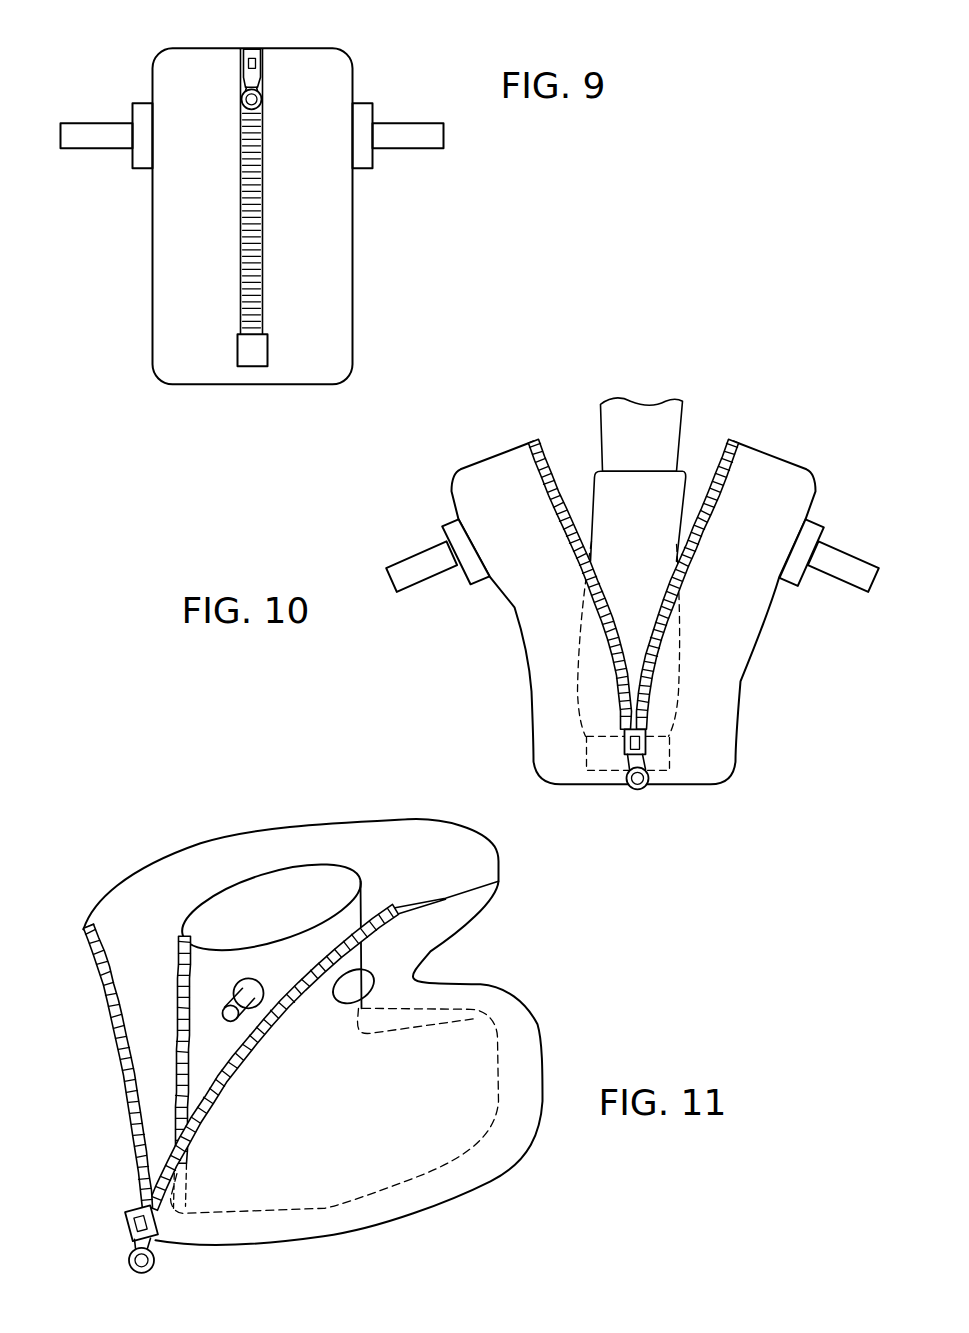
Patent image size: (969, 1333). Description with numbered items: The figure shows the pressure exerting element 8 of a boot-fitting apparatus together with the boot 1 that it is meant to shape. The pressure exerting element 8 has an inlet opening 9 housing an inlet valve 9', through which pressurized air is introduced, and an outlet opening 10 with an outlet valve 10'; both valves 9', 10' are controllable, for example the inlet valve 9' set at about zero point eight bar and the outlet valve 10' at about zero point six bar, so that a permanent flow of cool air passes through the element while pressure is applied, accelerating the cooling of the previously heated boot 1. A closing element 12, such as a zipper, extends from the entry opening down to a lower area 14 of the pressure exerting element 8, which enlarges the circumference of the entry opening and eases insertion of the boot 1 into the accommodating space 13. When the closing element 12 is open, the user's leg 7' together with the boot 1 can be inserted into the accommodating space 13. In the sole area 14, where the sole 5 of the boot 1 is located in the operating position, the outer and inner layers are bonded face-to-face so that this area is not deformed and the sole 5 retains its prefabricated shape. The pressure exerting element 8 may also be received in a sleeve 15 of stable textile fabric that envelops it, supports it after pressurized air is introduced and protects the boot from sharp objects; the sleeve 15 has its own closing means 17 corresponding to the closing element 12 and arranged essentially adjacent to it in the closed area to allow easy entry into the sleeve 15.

In FIG. 10, the boot 1 is at (655, 500).
In FIG. 10, the sole 5 is at (603, 753).
In FIG. 10, the leg 7' is at (642, 398).
In FIG. 10, the pressure exerting element 8 is at (717, 678).
In FIG. 11, the pressure exerting element 8 is at (322, 885).
In FIG. 10, the inlet opening 9 is at (437, 589).
In FIG. 9, the inlet valve 9' is at (103, 168).
In FIG. 10, the inlet valve 9' is at (829, 593).
In FIG. 10, the outlet opening 10 is at (675, 542).
In FIG. 9, the outlet valve 10' is at (403, 159).
In FIG. 9, the closing element 12 is at (267, 72).
In FIG. 11, the closing element 12 is at (183, 957).
In FIG. 10, the accommodating space 13 is at (578, 458).
In FIG. 9, the lower area 14 is at (257, 391).
In FIG. 10, the lower area 14 is at (661, 803).
In FIG. 11, the sleeve 15 is at (520, 1037).
In FIG. 11, the zipper band 17 is at (130, 1050).